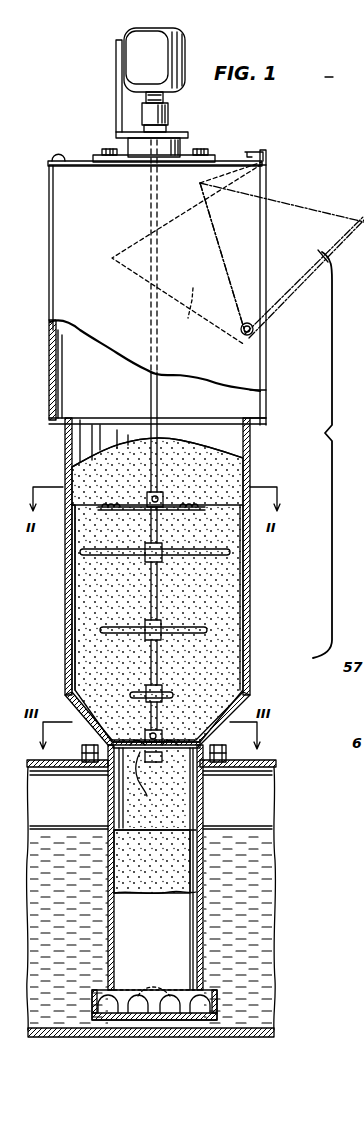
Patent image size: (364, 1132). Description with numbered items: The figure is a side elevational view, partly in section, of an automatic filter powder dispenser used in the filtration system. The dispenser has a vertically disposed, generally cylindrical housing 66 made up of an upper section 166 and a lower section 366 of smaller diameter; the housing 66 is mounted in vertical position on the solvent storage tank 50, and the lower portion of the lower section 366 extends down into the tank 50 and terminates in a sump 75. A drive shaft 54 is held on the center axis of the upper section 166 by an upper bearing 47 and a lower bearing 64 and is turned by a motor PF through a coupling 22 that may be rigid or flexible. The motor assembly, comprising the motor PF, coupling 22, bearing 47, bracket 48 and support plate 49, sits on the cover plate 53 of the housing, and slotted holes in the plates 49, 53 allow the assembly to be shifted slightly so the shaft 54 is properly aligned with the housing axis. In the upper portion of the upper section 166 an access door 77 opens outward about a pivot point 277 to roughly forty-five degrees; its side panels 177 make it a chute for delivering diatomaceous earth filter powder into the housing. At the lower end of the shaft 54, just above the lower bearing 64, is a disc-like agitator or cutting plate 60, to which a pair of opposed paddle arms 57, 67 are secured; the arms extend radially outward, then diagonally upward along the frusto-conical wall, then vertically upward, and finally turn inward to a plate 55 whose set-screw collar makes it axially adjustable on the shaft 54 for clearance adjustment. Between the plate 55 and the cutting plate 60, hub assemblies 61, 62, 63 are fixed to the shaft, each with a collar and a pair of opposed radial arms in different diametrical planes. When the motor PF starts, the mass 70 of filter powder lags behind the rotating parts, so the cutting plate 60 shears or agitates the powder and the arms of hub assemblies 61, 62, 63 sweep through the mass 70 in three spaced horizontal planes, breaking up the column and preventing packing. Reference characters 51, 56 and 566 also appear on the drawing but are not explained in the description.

The motor PF is at (168, 58).
The coupling 22 is at (166, 116).
The upper bearing 47 is at (166, 132).
The bracket 48 is at (117, 110).
The support plate 49 is at (180, 150).
The cover plate 53 is at (78, 160).
The drive shaft 54 is at (150, 392).
The plate 55 is at (110, 512).
The paddle arm 57 is at (80, 605).
The agitator or cutting plate 60 is at (186, 728).
The hub assembly 61 is at (141, 562).
The hub assembly 62 is at (139, 646).
The hub assembly 63 is at (135, 692).
The lower bearing 64 is at (147, 790).
The housing 66 is at (273, 407).
The paddle arm 67 is at (243, 628).
The mass of filter powder 70 is at (102, 614).
The sump 75 is at (93, 1002).
The access door 77 is at (263, 250).
The side panels 177 is at (193, 300).
The pivot point 277 is at (250, 336).
The upper section 166 is at (252, 440).
The lower section 366 is at (203, 806).
The solvent storage tank 50 is at (273, 760).
The feeder assembly 51 is at (337, 455).
The hopper section 56 is at (363, 584).
The tube section 566 is at (363, 940).